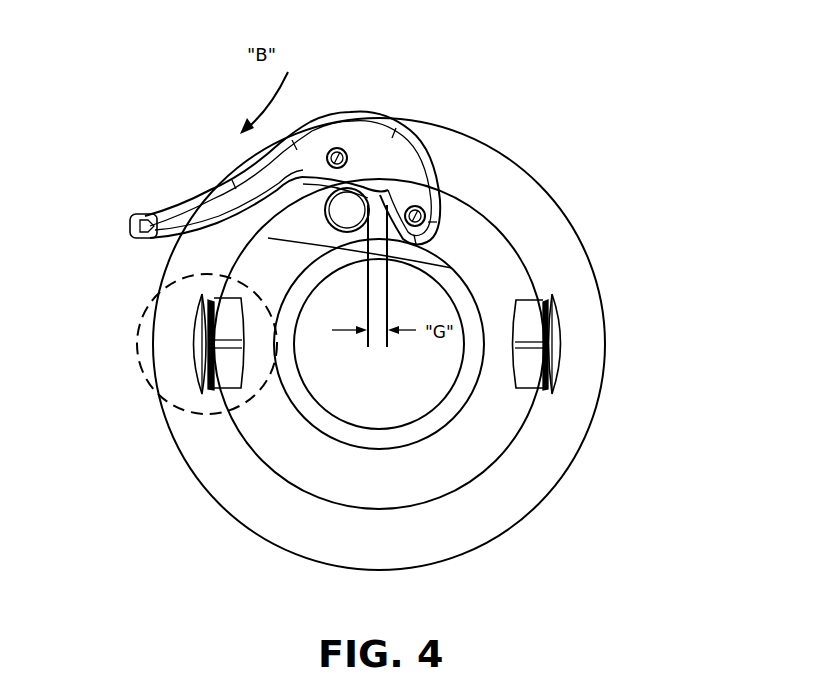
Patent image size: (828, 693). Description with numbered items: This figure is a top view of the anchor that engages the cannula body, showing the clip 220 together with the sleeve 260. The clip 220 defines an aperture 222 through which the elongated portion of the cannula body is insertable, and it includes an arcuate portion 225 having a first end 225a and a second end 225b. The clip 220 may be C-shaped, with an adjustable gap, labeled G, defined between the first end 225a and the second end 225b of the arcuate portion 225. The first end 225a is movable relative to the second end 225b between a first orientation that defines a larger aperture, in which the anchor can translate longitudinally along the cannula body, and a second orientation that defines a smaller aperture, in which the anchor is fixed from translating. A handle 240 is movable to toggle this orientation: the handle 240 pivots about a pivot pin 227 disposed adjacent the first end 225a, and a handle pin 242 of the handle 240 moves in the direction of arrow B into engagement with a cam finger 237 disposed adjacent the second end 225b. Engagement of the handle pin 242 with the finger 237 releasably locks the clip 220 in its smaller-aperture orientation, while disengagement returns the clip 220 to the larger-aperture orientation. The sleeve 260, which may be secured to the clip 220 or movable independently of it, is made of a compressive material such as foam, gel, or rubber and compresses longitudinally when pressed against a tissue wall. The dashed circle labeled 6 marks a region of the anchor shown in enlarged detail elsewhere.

The clip 220 is at (490, 420).
The sleeve 260 is at (545, 222).
The arcuate portion 225 is at (468, 297).
The aperture 222 is at (392, 394).
The first end 225a is at (543, 227).
The second end 225b is at (264, 230).
The detail view region of FIG. 6 is at (148, 303).
The finger 237 is at (328, 205).
The handle 240 is at (364, 120).
The handle pin 242 is at (336, 148).
The pivot pin 227 is at (417, 206).